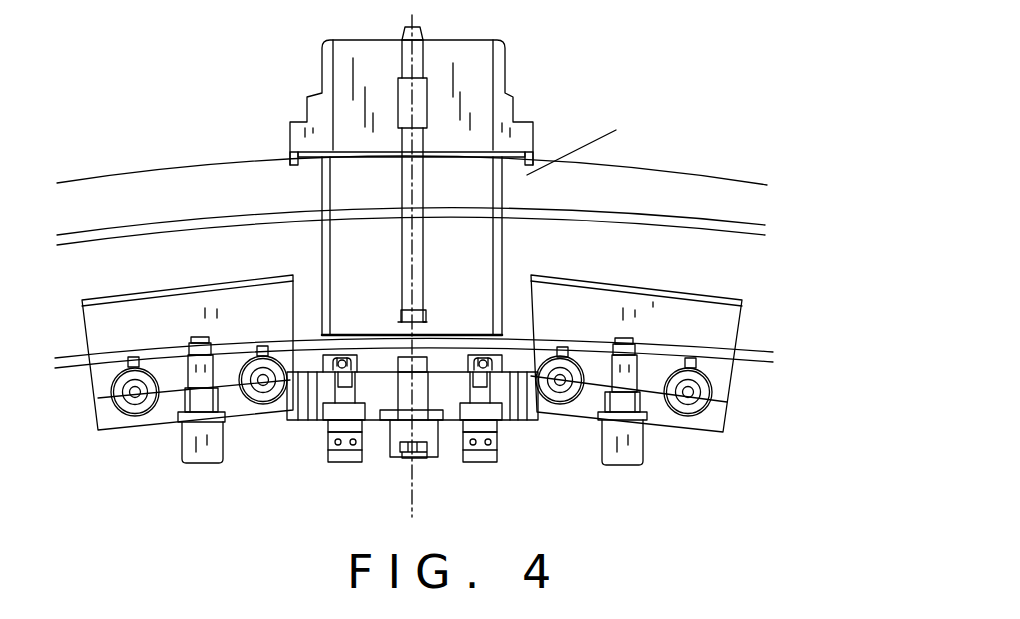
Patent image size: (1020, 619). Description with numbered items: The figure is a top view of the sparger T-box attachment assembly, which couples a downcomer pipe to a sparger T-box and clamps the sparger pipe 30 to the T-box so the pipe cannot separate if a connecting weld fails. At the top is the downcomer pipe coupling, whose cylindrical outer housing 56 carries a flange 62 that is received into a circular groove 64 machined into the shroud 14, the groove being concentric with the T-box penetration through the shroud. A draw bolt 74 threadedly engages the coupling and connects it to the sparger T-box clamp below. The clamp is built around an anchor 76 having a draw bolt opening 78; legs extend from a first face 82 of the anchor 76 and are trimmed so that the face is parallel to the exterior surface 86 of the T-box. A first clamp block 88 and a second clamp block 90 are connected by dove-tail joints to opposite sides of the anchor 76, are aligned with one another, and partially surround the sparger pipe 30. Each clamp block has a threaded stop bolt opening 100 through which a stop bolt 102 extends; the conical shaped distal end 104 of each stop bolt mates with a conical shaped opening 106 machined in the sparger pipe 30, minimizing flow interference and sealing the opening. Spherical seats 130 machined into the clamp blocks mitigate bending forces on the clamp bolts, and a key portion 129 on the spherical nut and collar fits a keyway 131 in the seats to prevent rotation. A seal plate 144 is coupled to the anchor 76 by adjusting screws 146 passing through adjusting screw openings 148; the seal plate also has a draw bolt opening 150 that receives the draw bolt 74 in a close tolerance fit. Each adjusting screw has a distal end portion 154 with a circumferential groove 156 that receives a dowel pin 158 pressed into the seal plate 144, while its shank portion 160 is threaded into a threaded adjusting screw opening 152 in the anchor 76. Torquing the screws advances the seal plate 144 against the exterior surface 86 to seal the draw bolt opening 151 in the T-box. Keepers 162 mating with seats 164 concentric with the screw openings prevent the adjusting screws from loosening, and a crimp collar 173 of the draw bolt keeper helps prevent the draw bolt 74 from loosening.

The shroud 14 is at (150, 176).
The sparger pipe 30 is at (183, 240).
The outer housing 56 is at (505, 78).
The flange 62 is at (536, 152).
The groove 64 is at (588, 146).
The draw bolt 74 is at (420, 54).
The anchor 76 is at (521, 428).
The draw bolt opening 78 is at (437, 397).
The first face 82 is at (313, 370).
The exterior surface 86 is at (405, 356).
The first clamp block 88 is at (83, 333).
The second clamp block 90 is at (742, 332).
The stop bolt opening 100 is at (235, 337).
The stop bolt 102 is at (250, 345).
The conical shaped distal end 104 is at (186, 390).
The conical shaped opening 106 is at (205, 373).
The key portion 129 is at (129, 357).
The spherical seat 130 is at (167, 368).
The keyway 131 is at (125, 356).
The seal plate 144 is at (507, 340).
The adjusting screw 146 is at (338, 393).
The adjusting screw opening 148 is at (344, 356).
The draw bolt opening 150 is at (422, 365).
The draw bolt opening 151 is at (420, 310).
The adjusting screw opening 152 is at (355, 382).
The distal end portion 154 is at (447, 362).
The circumferential groove 156 is at (356, 364).
The dowel pin 158 is at (333, 354).
The shank portion 160 is at (360, 388).
The keeper 162 is at (362, 427).
The seat 164 is at (460, 390).
The crimp collar 173 is at (432, 407).